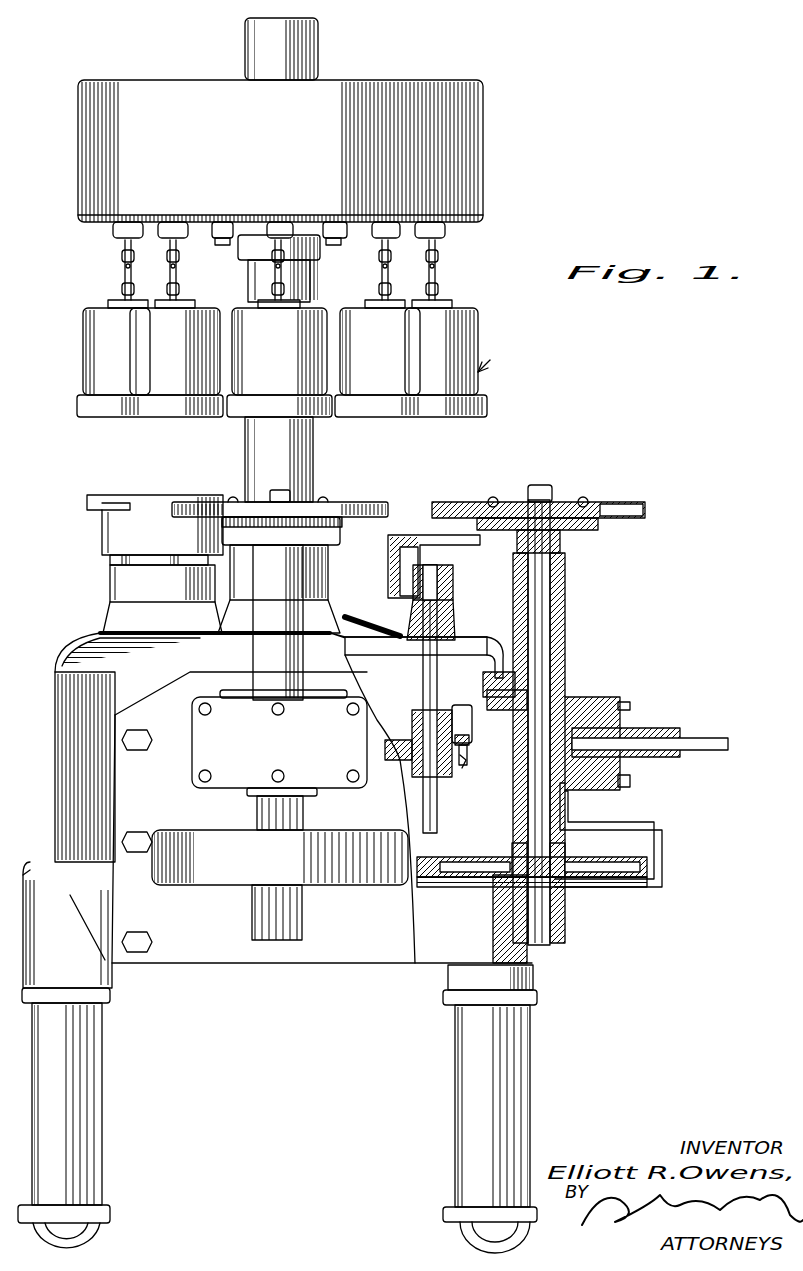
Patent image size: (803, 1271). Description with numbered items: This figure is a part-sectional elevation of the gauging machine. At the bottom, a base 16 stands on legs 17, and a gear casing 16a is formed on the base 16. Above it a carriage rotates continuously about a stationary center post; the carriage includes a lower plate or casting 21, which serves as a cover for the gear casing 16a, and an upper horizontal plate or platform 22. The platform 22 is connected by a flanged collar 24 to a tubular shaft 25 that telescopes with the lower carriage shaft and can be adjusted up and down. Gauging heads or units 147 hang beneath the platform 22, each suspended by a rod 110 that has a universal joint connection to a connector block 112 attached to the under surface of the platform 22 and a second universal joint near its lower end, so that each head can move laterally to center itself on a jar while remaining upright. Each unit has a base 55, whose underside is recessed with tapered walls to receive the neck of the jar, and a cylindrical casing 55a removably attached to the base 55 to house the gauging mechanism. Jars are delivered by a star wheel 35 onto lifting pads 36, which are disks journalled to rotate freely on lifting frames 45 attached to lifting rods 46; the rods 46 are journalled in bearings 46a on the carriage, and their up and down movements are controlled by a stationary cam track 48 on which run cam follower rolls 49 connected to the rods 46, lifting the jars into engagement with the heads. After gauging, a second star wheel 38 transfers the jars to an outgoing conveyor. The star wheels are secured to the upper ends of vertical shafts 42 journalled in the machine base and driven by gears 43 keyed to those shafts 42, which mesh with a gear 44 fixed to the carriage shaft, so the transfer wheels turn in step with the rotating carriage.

The upper horizontal plate or platform 22 is at (475, 230).
The connector block 112 is at (165, 232).
The rod 110 is at (122, 268).
The flanged collar 24 is at (315, 258).
The cylindrical casing 55a is at (195, 347).
The filling head 147 is at (501, 359).
The base 55 is at (140, 408).
The tubular shaft 25 is at (312, 452).
The star wheel 35 is at (345, 503).
The lifting pads 36 is at (155, 490).
The lifting frames 45 is at (150, 533).
The lifting rods 46 is at (115, 563).
The bearings 46a is at (450, 595).
The lower plate or casting 21 is at (85, 640).
The gear casing 16a is at (65, 738).
The base 16 is at (422, 963).
The legs 17 is at (100, 1032).
The star wheel 38 is at (595, 512).
The vertical shafts 42 is at (545, 625).
The cam follower rolls 49 is at (470, 738).
The stationary cam track 48 is at (463, 765).
The gear 44 is at (415, 857).
The gears 43 is at (470, 862).